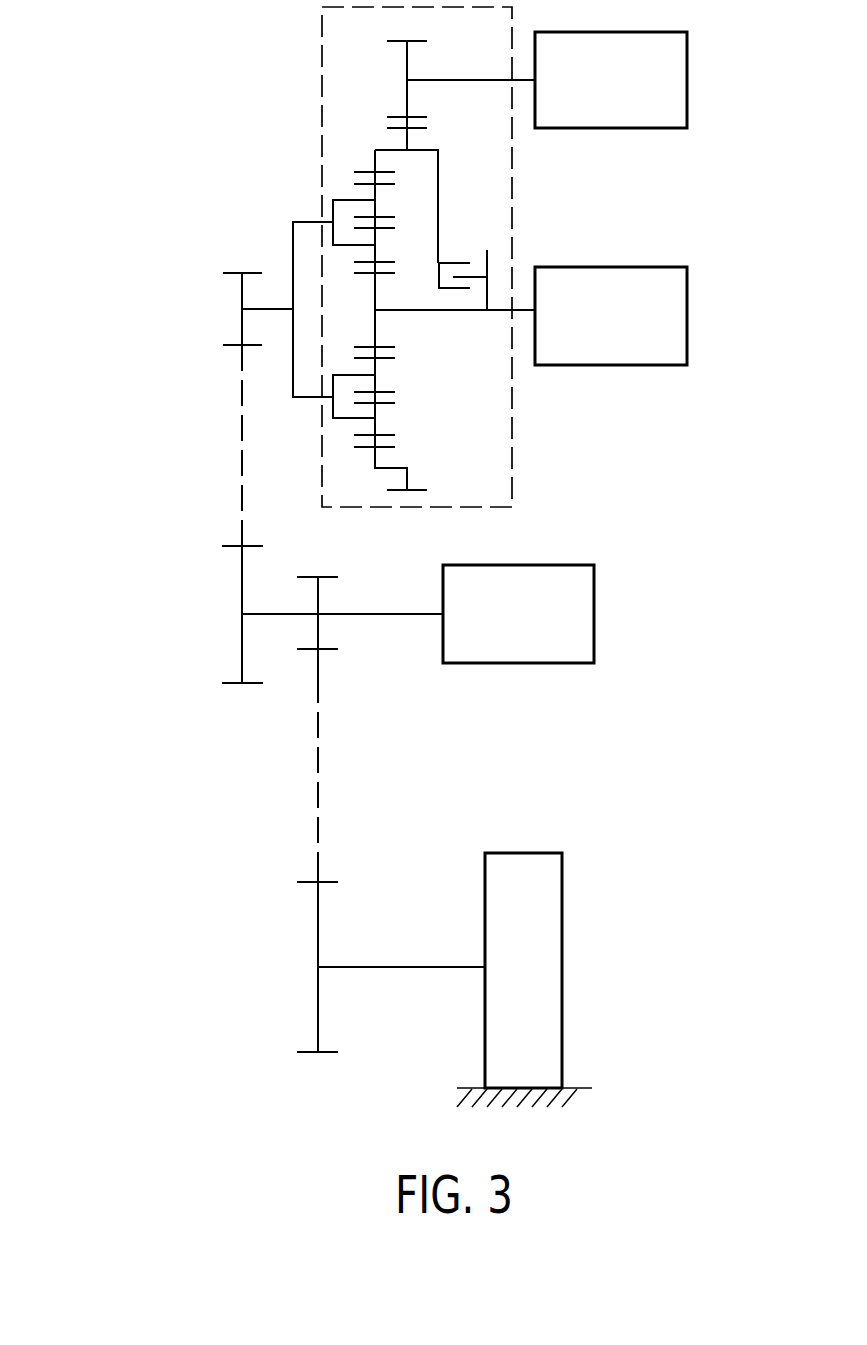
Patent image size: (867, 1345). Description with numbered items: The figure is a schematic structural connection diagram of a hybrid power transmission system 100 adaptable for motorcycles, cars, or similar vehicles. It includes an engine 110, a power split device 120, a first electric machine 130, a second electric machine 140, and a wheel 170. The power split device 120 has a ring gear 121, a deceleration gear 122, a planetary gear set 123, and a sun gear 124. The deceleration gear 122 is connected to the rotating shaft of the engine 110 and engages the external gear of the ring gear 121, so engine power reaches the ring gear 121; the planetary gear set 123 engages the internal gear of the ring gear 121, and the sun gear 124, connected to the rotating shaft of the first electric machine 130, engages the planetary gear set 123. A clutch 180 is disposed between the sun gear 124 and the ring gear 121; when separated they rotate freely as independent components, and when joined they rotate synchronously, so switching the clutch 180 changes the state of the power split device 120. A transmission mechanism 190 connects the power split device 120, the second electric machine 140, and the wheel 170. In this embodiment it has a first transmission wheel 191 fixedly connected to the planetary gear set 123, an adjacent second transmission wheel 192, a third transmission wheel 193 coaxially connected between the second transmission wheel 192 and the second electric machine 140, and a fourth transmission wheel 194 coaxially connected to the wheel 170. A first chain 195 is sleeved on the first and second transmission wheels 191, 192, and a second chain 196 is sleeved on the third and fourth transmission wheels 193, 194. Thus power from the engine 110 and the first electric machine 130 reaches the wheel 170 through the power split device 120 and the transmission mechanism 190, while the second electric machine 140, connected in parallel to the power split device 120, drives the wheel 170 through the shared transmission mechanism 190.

The hybrid power transmission system 100 is at (723, 1107).
The engine 110 is at (687, 80).
The power split device 120 is at (322, 37).
The ring gear 121 is at (375, 162).
The deceleration gear 122 is at (412, 38).
The planetary gear set 123 is at (342, 373).
The sun gear 124 is at (375, 323).
The first electric machine 130 is at (687, 315).
The second electric machine 140 is at (594, 613).
The wheel 170 is at (562, 972).
The clutch 180 is at (478, 273).
The transmission mechanism 190 is at (109, 8).
The first transmission wheel 191 is at (241, 298).
The second transmission wheel 192 is at (242, 580).
The third transmission wheel 193 is at (318, 630).
The fourth transmission wheel 194 is at (318, 1012).
The first chain 195 is at (242, 418).
The second chain 196 is at (318, 800).